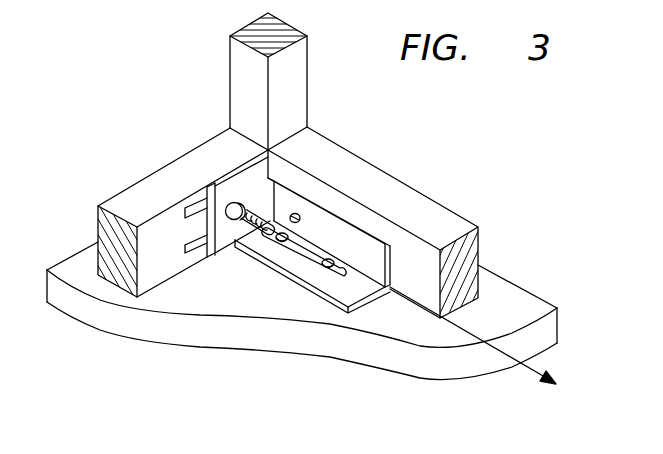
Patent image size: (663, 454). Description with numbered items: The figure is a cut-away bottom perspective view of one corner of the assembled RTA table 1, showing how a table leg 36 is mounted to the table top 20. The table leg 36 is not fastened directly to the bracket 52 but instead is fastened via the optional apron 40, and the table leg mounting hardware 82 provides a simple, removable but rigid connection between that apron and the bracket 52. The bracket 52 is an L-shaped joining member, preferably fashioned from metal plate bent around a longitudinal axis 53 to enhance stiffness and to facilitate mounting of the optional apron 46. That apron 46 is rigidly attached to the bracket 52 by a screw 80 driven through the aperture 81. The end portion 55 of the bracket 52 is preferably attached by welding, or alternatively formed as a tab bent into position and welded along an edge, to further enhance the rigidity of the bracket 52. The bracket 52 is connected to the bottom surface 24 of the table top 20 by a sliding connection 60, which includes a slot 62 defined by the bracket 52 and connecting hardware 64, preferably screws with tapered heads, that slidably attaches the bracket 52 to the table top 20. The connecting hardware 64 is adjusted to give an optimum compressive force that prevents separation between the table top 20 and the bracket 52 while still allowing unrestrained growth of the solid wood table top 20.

The RTA table 1 is at (324, 203).
The table top 20 is at (70, 257).
The bottom surface 24 is at (512, 298).
The table leg 36 is at (247, 62).
The apron 40 is at (230, 145).
The apron 46 is at (452, 227).
The bracket 52 is at (297, 190).
The longitudinal axis 53 is at (528, 368).
The end portion 55 is at (220, 178).
The sliding connection 60 is at (326, 288).
The slot 62 is at (305, 253).
The connecting hardware 64 is at (320, 257).
The screw 80 is at (313, 173).
The aperture 81 is at (300, 218).
The table leg mounting hardware 82 is at (188, 243).